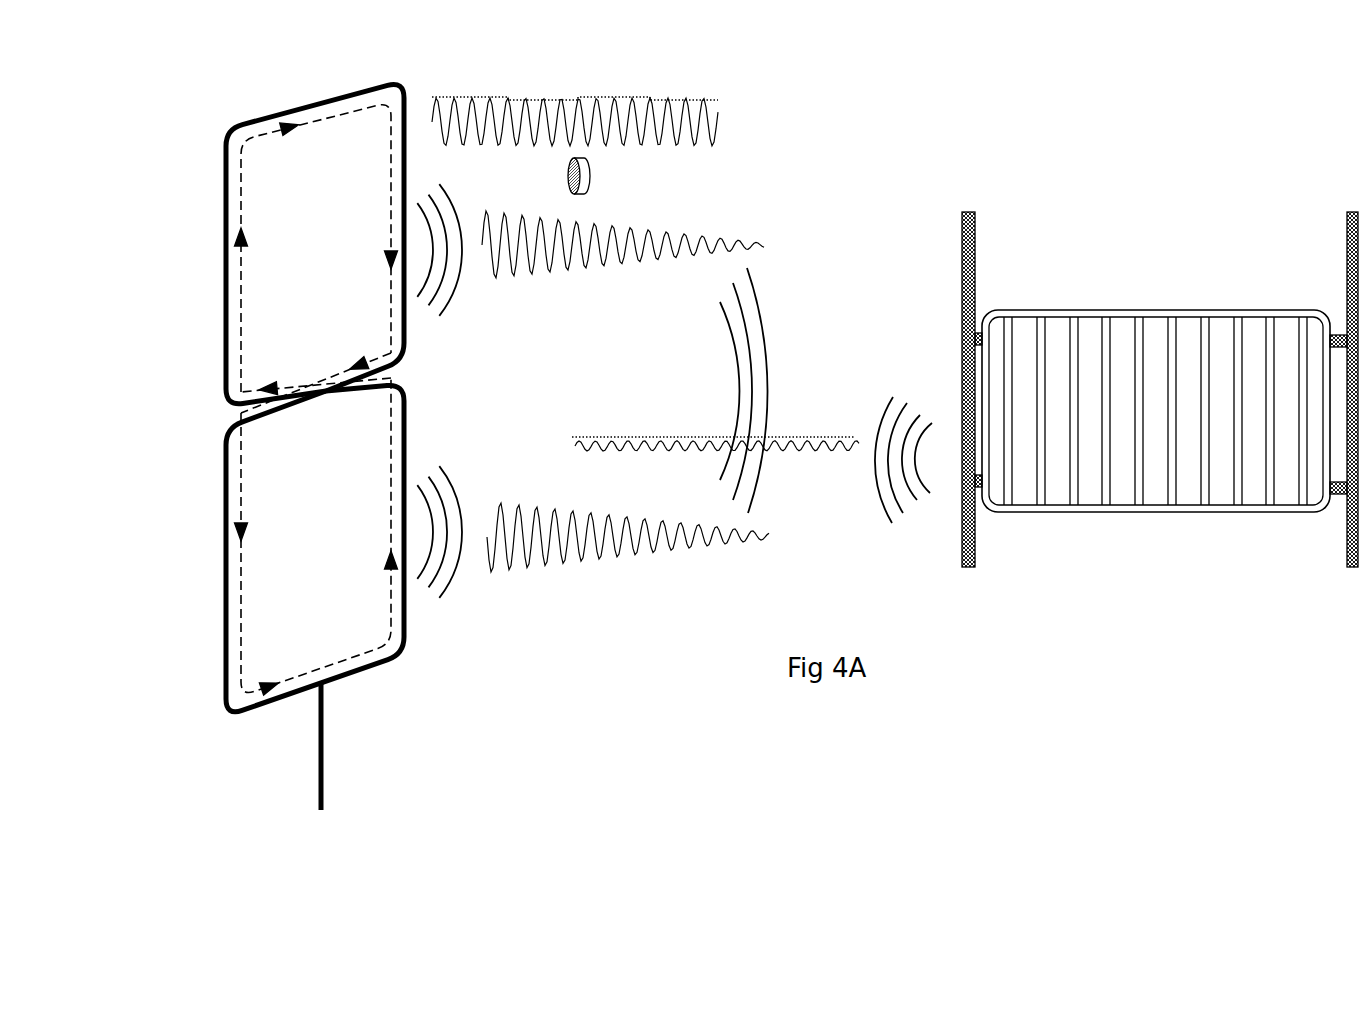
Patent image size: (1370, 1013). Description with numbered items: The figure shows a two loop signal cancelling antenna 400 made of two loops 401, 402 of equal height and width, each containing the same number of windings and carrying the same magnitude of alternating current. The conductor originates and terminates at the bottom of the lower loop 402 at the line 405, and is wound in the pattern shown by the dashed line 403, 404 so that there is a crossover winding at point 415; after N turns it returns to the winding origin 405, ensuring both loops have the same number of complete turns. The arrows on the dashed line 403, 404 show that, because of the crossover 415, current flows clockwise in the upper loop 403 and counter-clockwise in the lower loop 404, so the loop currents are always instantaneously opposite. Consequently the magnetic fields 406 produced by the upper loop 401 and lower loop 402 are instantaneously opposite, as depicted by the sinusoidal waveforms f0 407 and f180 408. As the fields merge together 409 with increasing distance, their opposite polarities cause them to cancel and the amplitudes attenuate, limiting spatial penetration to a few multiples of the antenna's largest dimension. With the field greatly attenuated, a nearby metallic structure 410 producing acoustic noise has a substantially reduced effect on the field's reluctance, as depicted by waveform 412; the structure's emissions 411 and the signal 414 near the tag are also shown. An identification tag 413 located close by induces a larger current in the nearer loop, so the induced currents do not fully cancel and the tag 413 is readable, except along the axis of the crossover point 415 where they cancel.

The antenna 400 is at (260, 452).
The upper loop 401 is at (213, 285).
The lower loop 402 is at (215, 583).
The dashed line indicating current in upper loop 403 is at (382, 210).
The dashed line indicating current in lower loop 404 is at (385, 503).
The point of winding origin 405 is at (337, 758).
The magnetic fields 406 is at (453, 322).
The sinusoidal waveform f0 407 is at (563, 287).
The sinusoidal waveform f180 408 is at (580, 567).
The merging of magnetic fields 409 is at (770, 368).
The metallic structure 410 is at (1122, 303).
The tag response signal 411 is at (905, 392).
The waveform depicting reduced effect on reluctance 412 is at (800, 455).
The identification tag 413 is at (597, 167).
The tag received signal 414 is at (547, 92).
The crossover point 415 is at (313, 373).